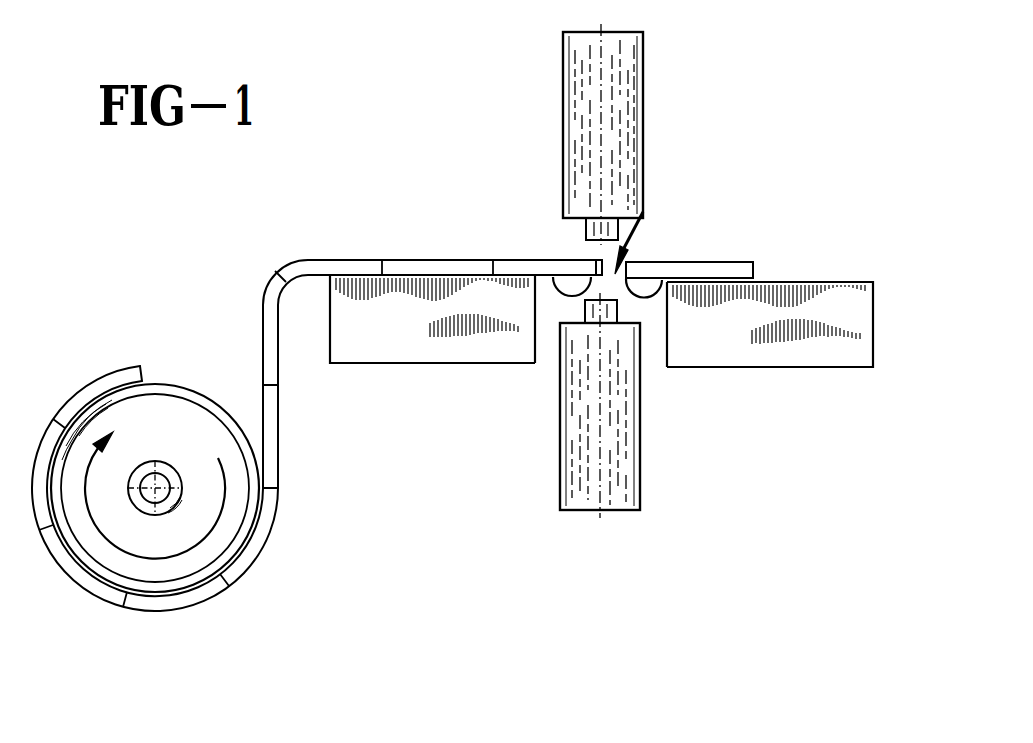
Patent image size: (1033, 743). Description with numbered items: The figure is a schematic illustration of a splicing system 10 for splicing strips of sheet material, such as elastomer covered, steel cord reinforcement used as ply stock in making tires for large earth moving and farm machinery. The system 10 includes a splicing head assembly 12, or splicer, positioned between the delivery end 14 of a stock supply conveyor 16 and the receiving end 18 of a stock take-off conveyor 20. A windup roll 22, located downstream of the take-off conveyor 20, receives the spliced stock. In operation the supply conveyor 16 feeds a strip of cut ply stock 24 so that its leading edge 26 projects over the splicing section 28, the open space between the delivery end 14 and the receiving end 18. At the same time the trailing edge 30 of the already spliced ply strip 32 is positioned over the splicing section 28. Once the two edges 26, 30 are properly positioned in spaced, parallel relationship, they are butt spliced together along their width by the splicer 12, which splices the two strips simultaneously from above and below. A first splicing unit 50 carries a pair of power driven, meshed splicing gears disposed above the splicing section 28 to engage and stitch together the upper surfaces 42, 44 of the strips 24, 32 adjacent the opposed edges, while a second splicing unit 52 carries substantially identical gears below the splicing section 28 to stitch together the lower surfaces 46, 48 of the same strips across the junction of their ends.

The splicing system 10 is at (456, 460).
The splicing head assembly 12 is at (633, 122).
The delivery end 14 is at (668, 328).
The stock supply conveyor 16 is at (805, 350).
The receiving end 18 is at (535, 328).
The stock take-off conveyor 20 is at (400, 342).
The windup roll 22 is at (177, 378).
The cut ply stock 24 is at (655, 262).
The leading edge 26 is at (631, 262).
The splicing section 28 is at (643, 212).
The trailing edge 30 is at (574, 260).
The spliced ply strip 32 is at (405, 260).
The upper surface 42 is at (748, 262).
The upper surface 44 is at (505, 260).
The lower surface 46 is at (707, 262).
The lower surface 48 is at (550, 262).
The first splicing unit 50 is at (566, 95).
The second splicing unit 52 is at (580, 450).